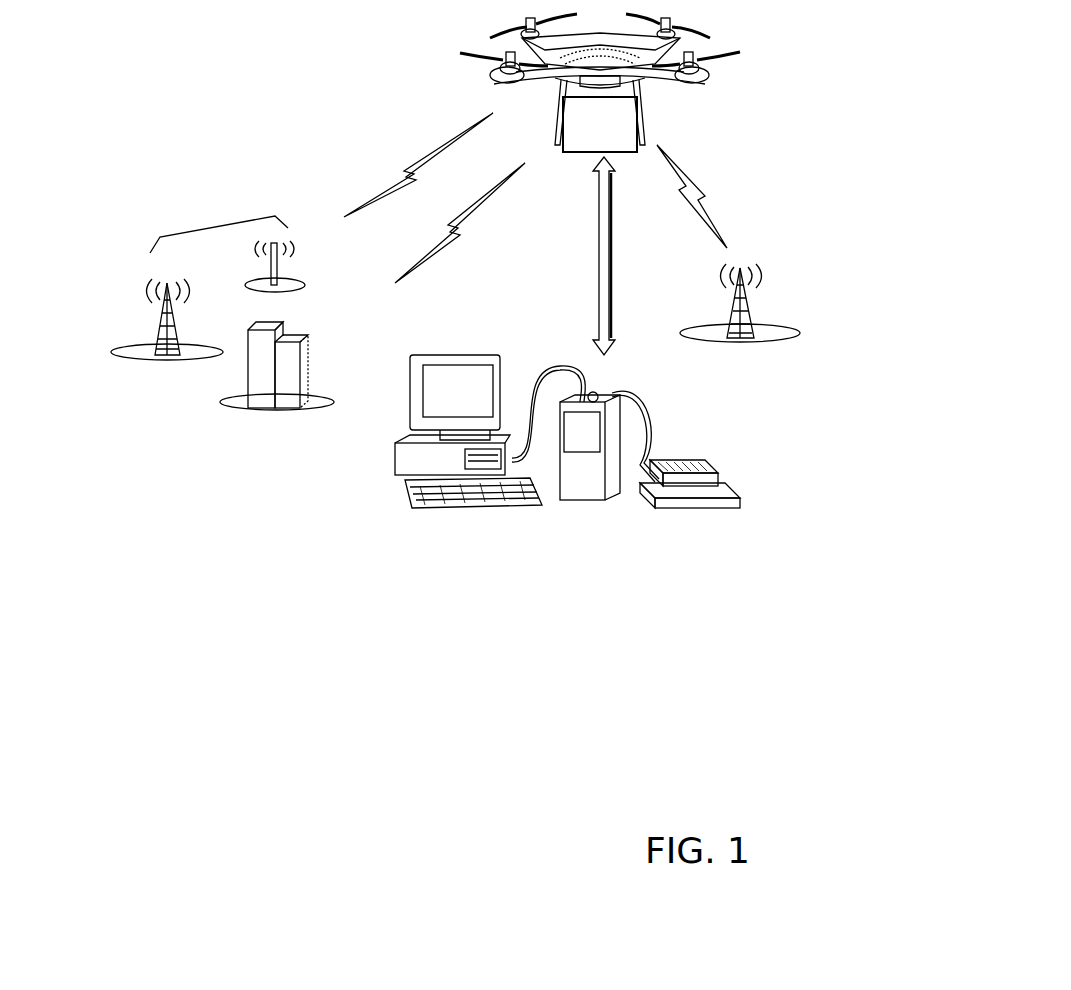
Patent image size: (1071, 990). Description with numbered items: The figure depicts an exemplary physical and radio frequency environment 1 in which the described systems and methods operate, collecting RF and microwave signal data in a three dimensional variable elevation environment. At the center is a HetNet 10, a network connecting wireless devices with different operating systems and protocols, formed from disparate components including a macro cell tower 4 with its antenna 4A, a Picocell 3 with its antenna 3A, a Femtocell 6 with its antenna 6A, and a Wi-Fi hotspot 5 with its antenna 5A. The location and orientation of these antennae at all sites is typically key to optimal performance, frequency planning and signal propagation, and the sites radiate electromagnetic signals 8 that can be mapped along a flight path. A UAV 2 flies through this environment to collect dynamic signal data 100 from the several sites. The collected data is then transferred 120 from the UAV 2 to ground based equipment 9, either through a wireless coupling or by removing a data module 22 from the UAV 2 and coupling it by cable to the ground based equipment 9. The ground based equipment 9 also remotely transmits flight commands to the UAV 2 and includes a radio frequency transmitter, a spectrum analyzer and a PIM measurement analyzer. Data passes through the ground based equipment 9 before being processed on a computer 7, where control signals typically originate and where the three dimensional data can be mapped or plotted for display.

The physical and radio frequency environment 1 is at (320, 64).
The UAV 2 is at (668, 110).
The data module 22 is at (725, 485).
The dynamic signal data 100 is at (538, 198).
The data transfer 120 is at (619, 256).
The HetNet 10 is at (218, 229).
The electromagnetic signals 8 is at (781, 240).
The macro cell tower 4 is at (455, 334).
The antenna 4A is at (172, 309).
The Picocell 3 is at (298, 262).
The antenna 3A is at (262, 256).
The Femtocell 6 is at (291, 322).
The antenna 6A is at (248, 364).
The Wi-Fi hotspot 5 is at (320, 344).
The antenna 5A is at (310, 378).
The computer 7 is at (465, 352).
The ground based equipment 9 is at (620, 508).